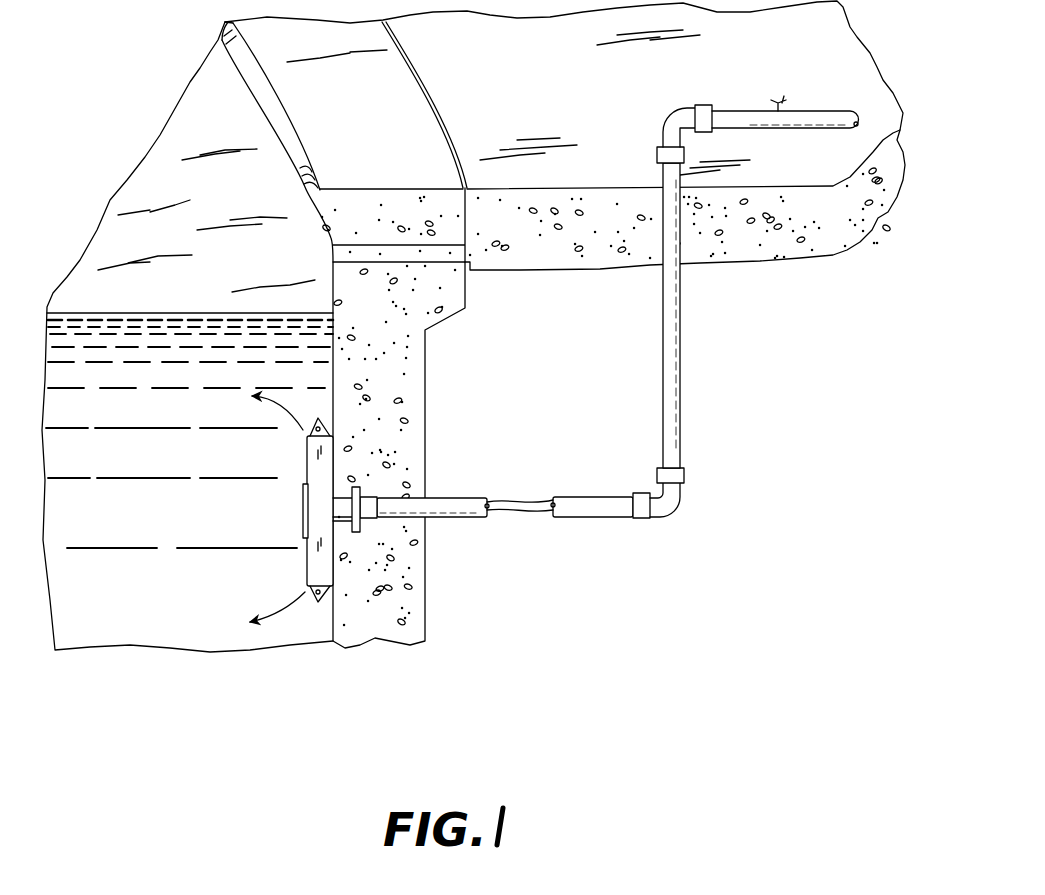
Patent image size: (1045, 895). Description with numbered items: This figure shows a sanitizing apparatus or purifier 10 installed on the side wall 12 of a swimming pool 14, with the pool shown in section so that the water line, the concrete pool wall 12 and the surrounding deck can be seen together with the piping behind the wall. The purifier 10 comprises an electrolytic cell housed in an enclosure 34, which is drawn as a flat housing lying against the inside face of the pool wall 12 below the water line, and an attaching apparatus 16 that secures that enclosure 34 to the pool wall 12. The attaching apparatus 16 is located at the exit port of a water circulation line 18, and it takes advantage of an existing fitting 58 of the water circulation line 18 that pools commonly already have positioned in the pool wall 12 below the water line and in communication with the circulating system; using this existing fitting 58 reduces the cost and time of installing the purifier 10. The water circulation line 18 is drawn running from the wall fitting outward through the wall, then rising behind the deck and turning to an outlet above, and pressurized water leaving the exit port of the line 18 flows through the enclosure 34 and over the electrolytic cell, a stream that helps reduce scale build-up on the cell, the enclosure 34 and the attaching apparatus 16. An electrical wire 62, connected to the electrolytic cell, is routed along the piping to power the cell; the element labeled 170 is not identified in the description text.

The purifier 10 is at (297, 520).
The pool wall 12 is at (383, 630).
The swimming pool 14 is at (110, 105).
The attaching apparatus 16 is at (345, 532).
The water circulation line 18 is at (683, 305).
The enclosure 34 is at (305, 561).
The existing fitting 58 is at (360, 490).
The electrical wire 62 is at (515, 500).
The outlet pipe end 170 is at (800, 105).